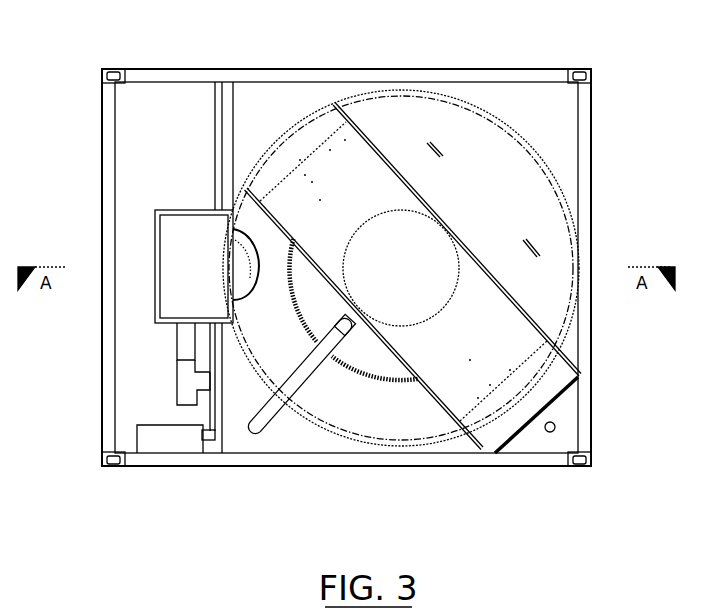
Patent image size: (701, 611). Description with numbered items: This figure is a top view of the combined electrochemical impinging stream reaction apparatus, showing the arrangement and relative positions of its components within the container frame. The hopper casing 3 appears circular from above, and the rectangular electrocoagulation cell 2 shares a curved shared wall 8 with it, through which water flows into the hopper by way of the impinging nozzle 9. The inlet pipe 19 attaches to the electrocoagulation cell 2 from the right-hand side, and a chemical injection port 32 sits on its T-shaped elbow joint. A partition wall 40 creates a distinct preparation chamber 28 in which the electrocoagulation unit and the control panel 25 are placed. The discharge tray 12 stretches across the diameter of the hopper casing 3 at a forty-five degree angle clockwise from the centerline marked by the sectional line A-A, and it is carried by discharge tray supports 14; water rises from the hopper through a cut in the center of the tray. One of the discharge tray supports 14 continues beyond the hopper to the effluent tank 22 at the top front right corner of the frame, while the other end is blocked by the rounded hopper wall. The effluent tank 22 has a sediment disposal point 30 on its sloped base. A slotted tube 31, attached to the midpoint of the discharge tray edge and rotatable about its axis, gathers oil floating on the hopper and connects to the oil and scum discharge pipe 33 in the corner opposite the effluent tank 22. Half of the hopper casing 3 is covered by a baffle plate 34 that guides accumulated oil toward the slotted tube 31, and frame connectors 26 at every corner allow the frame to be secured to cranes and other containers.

The electrocoagulation cell 2 is at (197, 273).
The hopper casing 3 is at (543, 150).
The curved shared wall 8 is at (230, 230).
The impinging nozzle 9 is at (240, 270).
The discharge tray 12 is at (493, 327).
The discharge tray supports 14 is at (298, 143).
The inlet pipe 19 is at (182, 337).
The effluent tank 22 is at (533, 440).
The control panel 25 is at (158, 437).
The frame connectors 26 is at (576, 76).
The preparation chamber 28 is at (160, 117).
The sediment disposal point 30 is at (556, 432).
The slotted tube 31 is at (308, 437).
The chemical injection port 32 is at (185, 382).
The oil and scum discharge pipe 33 is at (257, 437).
The baffle plate 34 is at (513, 200).
The partition wall 40 is at (220, 97).